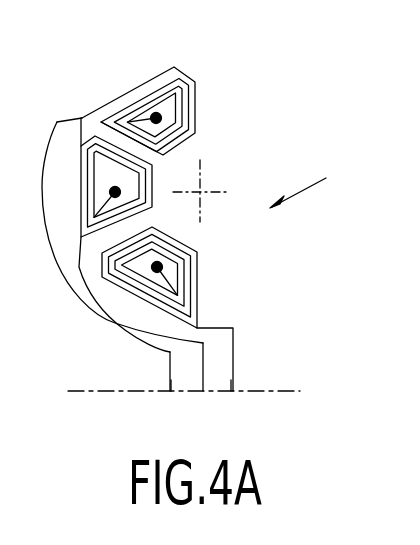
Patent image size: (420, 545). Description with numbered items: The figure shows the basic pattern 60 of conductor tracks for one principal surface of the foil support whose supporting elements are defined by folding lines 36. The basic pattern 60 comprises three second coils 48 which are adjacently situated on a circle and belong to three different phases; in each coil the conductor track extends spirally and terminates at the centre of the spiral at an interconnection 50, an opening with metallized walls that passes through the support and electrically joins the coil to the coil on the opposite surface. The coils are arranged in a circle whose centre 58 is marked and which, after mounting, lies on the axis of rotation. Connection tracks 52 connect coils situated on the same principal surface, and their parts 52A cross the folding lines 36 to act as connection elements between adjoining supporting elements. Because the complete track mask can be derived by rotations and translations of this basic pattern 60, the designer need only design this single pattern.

The folding line 36 is at (265, 390).
The second coil 48 is at (153, 86).
The interconnection 50 is at (156, 118).
The connection track 52 is at (79, 262).
The connection track part 52A is at (171, 376).
The centre of the circle 58 is at (205, 187).
The basic pattern 60 is at (328, 192).